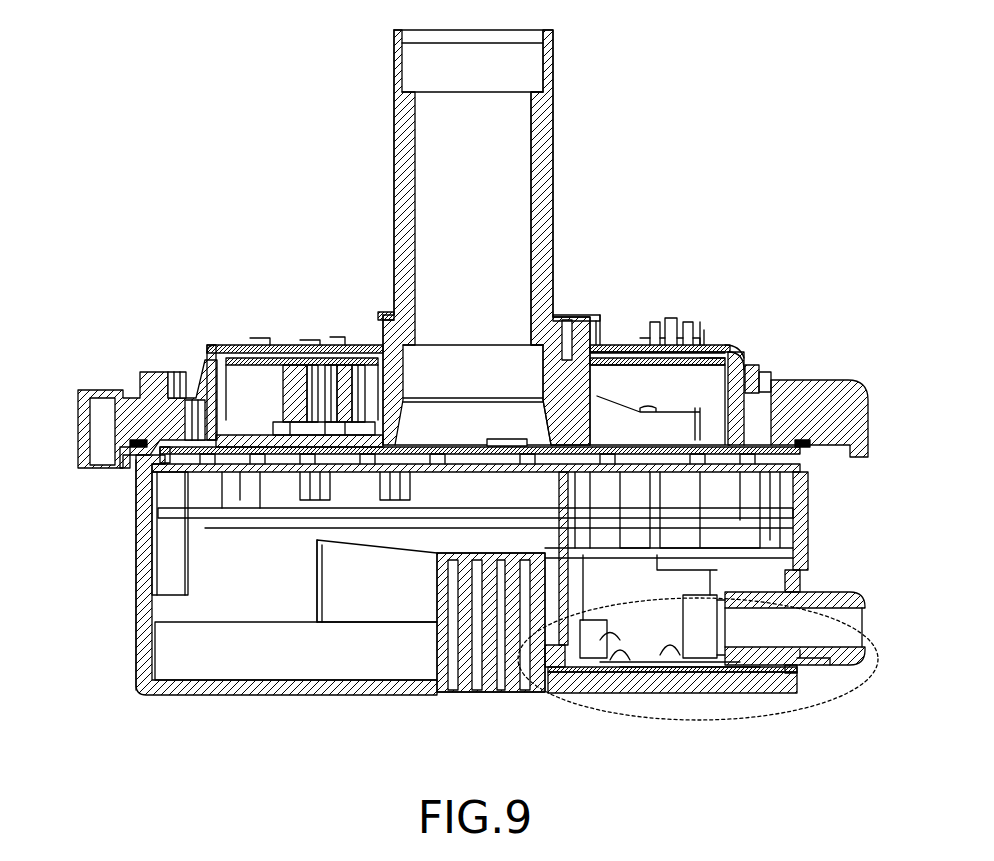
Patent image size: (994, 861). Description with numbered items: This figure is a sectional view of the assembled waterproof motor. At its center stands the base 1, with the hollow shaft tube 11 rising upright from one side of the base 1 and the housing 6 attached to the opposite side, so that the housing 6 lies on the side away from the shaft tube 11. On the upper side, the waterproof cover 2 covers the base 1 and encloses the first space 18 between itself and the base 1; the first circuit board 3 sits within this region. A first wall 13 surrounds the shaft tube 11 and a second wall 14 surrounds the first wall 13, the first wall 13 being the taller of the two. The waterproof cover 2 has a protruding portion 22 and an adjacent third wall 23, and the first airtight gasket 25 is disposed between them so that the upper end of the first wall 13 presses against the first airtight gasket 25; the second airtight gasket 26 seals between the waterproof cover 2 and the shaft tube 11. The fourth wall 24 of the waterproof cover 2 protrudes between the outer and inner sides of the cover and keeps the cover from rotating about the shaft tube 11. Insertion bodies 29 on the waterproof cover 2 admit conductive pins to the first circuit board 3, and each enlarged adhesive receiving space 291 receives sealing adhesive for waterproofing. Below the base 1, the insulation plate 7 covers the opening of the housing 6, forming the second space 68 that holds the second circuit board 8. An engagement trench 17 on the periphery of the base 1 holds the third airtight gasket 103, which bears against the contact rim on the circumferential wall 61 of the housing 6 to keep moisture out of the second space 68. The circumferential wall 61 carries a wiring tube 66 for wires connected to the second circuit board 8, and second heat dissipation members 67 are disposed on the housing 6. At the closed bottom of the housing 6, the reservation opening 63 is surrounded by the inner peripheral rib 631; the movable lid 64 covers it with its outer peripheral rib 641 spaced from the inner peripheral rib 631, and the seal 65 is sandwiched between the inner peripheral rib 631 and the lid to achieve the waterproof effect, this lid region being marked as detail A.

The base 1 is at (80, 404).
The waterproof cover 2 is at (240, 343).
The first circuit board 3 is at (222, 350).
The housing 6 is at (126, 621).
The insulation plate 7 is at (237, 436).
The second circuit board 8 is at (200, 499).
The shaft tube 11 is at (398, 178).
The first wall 13 is at (757, 366).
The second wall 14 is at (775, 376).
The engagement trench 17 is at (818, 448).
The first space 18 is at (712, 398).
The protruding portion 22 is at (822, 381).
The third wall 23 is at (706, 352).
The fourth wall 24 is at (598, 322).
The first airtight gasket 25 is at (736, 346).
The second airtight gasket 26 is at (385, 316).
The insertion body 29 is at (693, 344).
The adhesive receiving space 291 is at (702, 345).
The circumferential wall 61 is at (137, 573).
The reservation opening 63 is at (600, 662).
The movable lid 64 is at (724, 682).
The seal 65 is at (680, 662).
The wiring tube 66 is at (838, 592).
The second heat dissipation member 67 is at (460, 682).
The second space 68 is at (774, 495).
The third airtight gasket 103 is at (124, 446).
The inner peripheral rib 631 is at (780, 682).
The outer peripheral rib 641 is at (822, 666).
The detail region A is at (702, 659).